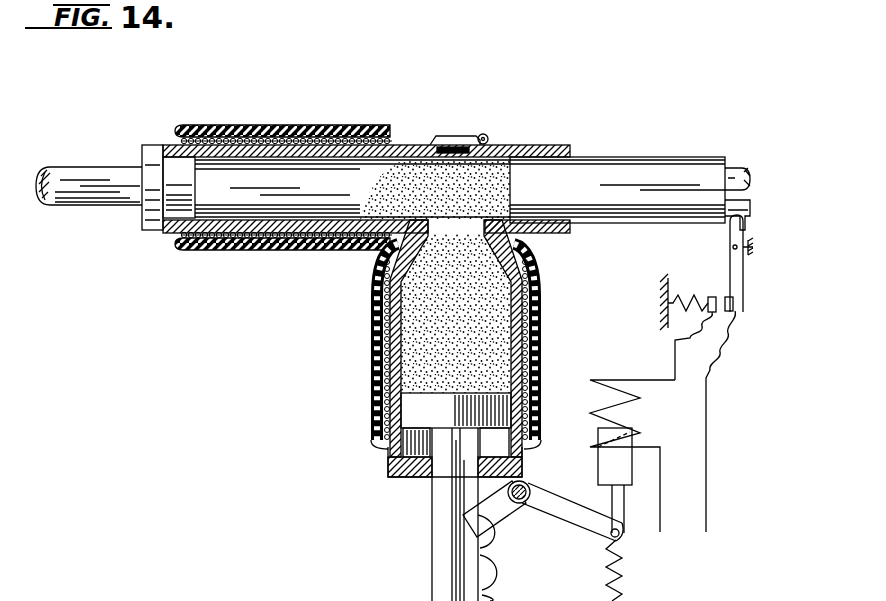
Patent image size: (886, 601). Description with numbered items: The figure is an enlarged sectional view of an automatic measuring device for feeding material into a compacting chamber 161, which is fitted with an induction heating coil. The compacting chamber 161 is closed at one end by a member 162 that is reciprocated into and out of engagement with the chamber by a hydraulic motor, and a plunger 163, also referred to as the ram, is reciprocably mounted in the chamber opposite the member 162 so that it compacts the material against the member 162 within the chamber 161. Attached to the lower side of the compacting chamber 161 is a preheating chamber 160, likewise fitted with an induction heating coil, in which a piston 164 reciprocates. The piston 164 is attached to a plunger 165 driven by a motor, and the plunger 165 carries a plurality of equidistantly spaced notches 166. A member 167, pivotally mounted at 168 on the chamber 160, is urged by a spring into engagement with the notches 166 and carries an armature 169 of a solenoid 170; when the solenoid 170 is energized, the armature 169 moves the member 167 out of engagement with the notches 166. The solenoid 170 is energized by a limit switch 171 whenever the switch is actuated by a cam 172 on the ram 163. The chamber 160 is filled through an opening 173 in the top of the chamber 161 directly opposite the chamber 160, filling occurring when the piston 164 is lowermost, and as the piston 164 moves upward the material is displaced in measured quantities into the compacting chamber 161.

The preheating chamber 160 is at (378, 372).
The compacting chamber 161 is at (314, 136).
The member 162 is at (153, 150).
The plunger 163 is at (596, 168).
The piston 164 is at (408, 405).
The plunger 165 is at (440, 511).
The notches 166 is at (485, 578).
The member 167 is at (496, 518).
The pivot 168 is at (552, 481).
The armature 169 is at (600, 480).
The solenoid 170 is at (632, 406).
The limit switch 171 is at (737, 314).
The cam 172 is at (725, 203).
The opening 173 is at (462, 137).